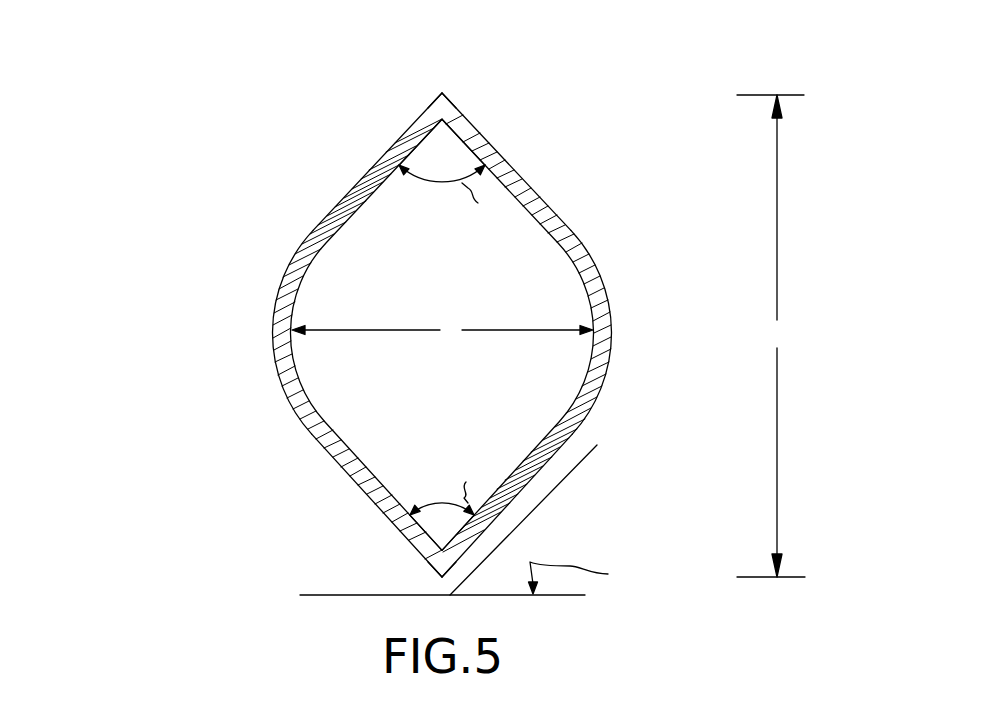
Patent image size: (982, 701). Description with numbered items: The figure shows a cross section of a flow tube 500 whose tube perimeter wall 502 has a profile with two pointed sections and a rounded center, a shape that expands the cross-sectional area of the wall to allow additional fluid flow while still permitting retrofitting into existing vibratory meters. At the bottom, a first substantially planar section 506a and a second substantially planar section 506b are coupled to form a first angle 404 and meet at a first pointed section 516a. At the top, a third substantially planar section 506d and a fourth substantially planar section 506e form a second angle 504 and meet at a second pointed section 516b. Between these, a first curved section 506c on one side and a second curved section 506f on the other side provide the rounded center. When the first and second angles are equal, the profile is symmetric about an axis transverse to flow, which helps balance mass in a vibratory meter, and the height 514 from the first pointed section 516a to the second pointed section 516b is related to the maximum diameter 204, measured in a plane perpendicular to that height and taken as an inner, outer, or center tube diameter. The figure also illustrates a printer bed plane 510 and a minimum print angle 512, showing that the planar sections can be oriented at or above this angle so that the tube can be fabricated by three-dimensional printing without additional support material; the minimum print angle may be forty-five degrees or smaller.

The flow tube 500 is at (147, 172).
The tube perimeter wall 502 is at (532, 202).
The second angle θ2 504 is at (420, 182).
The first angle θ1 404 is at (418, 505).
The maximum diameter d 204 is at (484, 322).
The first substantially planar section 506a is at (307, 447).
The second substantially planar section 506b is at (597, 430).
The first curved section 506c is at (272, 322).
The third substantially planar section 506d is at (360, 183).
The fourth substantially planar section 506e is at (495, 158).
The second curved section 506f is at (612, 320).
The printer bed plane 510 is at (320, 595).
The minimum print angle θmin 512 is at (507, 540).
The height h 514 is at (777, 198).
The first pointed section 516a is at (438, 565).
The second pointed section 516b is at (450, 110).